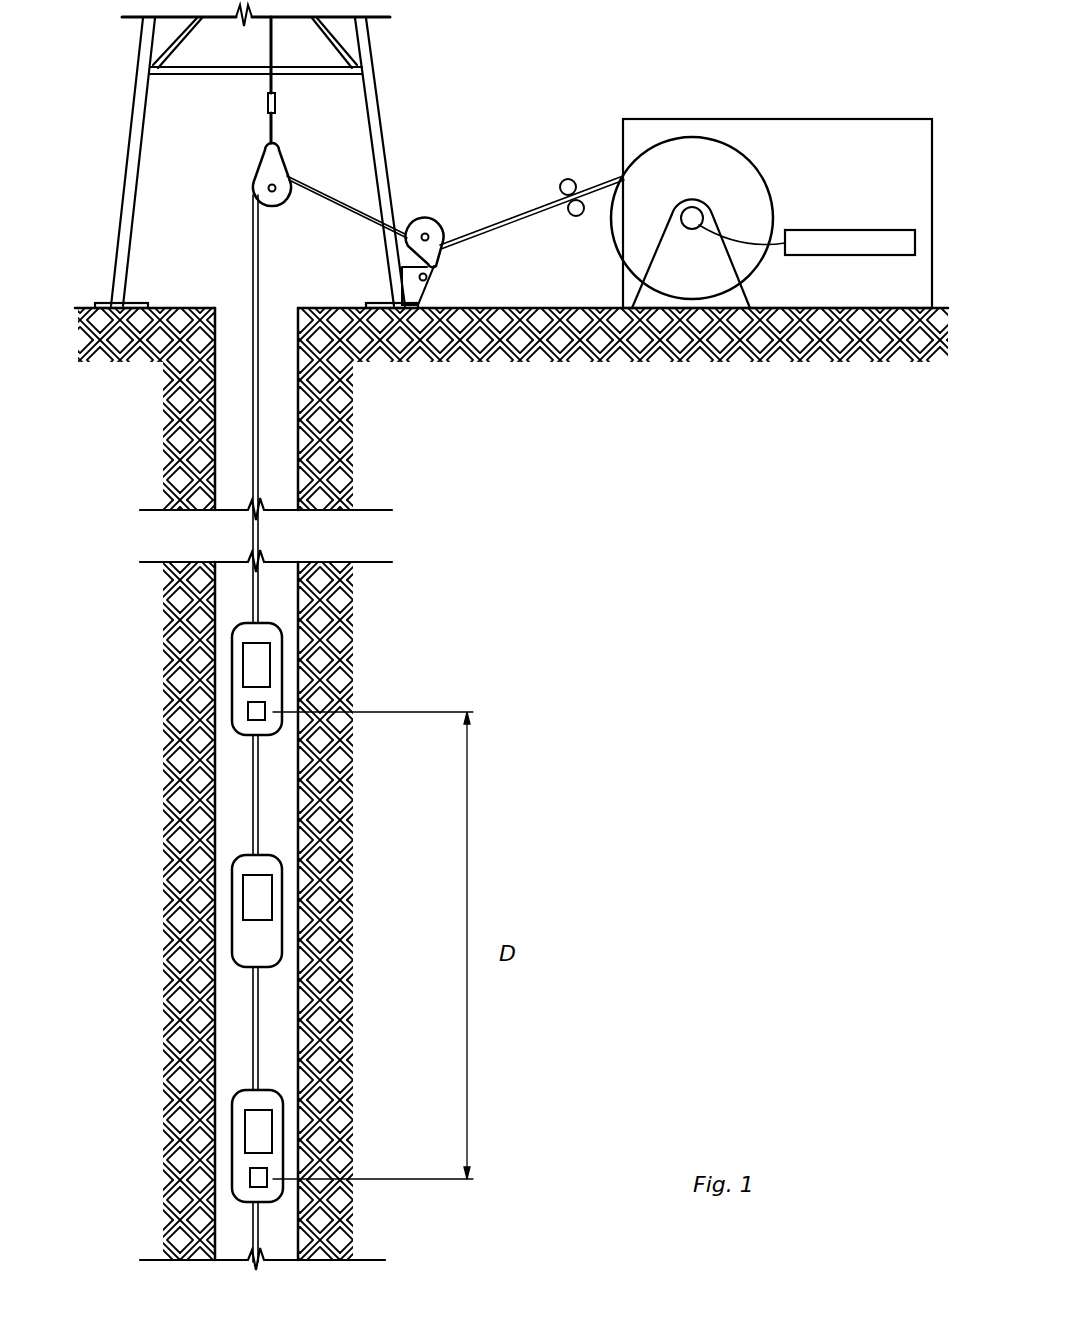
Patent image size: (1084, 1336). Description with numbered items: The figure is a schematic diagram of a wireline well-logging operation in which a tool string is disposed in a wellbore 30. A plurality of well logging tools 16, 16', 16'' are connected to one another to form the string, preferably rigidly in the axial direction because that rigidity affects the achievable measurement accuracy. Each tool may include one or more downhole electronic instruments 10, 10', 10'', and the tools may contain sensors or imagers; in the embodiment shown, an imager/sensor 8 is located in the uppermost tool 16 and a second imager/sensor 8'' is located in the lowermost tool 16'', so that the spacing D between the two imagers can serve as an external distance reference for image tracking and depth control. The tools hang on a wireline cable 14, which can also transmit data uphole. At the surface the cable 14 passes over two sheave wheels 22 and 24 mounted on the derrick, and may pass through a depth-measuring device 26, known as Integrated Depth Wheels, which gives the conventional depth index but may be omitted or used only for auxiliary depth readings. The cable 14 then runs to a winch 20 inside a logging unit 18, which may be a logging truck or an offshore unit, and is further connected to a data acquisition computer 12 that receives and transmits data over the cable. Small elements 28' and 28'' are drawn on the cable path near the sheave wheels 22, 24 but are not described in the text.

The sensor (imager) 8 is at (185, 700).
The imager/sensor 8'' is at (185, 1167).
The downhole electronic instrument 10 is at (188, 679).
The downhole tool 10' is at (188, 911).
The downhole tool 10'' is at (188, 1146).
The data acquisition computer 12 is at (845, 229).
The wireline cable 14 is at (511, 218).
The well logging tool 16 is at (182, 665).
The well logging tool 16' is at (183, 908).
The well logging tool 16'' is at (182, 1131).
The logging unit 18 is at (863, 118).
The cable drum 20 is at (757, 166).
The sheave wheel 22 is at (253, 183).
The sheave wheel 24 is at (424, 218).
The depth-measuring device 26 is at (566, 179).
The tension sensor 28' is at (237, 105).
The tension sensor 28'' is at (451, 284).
The wellbore 30 is at (233, 312).